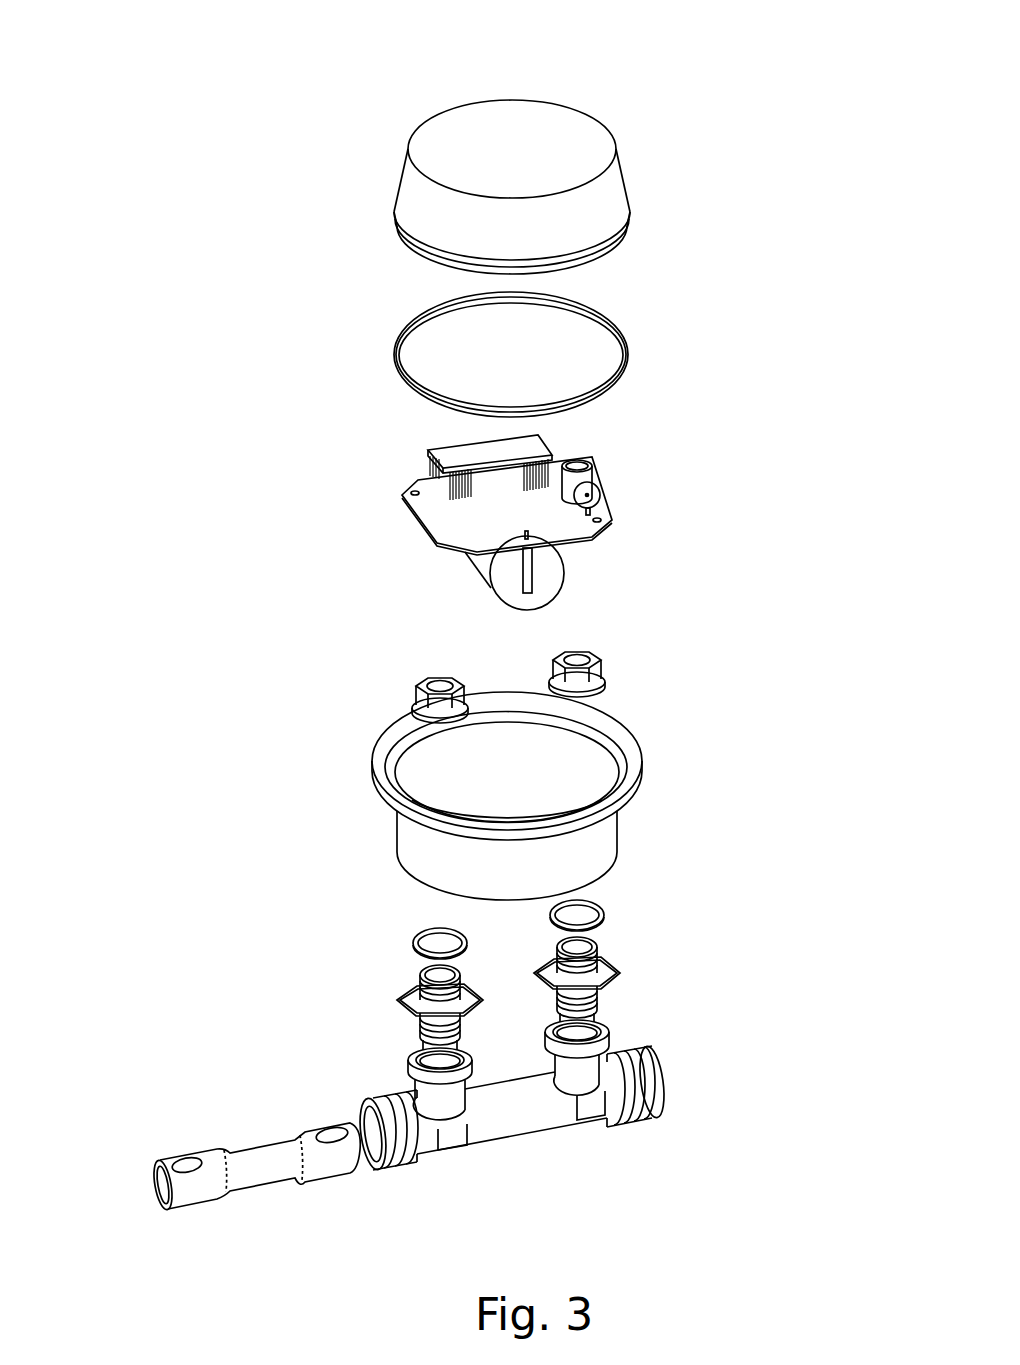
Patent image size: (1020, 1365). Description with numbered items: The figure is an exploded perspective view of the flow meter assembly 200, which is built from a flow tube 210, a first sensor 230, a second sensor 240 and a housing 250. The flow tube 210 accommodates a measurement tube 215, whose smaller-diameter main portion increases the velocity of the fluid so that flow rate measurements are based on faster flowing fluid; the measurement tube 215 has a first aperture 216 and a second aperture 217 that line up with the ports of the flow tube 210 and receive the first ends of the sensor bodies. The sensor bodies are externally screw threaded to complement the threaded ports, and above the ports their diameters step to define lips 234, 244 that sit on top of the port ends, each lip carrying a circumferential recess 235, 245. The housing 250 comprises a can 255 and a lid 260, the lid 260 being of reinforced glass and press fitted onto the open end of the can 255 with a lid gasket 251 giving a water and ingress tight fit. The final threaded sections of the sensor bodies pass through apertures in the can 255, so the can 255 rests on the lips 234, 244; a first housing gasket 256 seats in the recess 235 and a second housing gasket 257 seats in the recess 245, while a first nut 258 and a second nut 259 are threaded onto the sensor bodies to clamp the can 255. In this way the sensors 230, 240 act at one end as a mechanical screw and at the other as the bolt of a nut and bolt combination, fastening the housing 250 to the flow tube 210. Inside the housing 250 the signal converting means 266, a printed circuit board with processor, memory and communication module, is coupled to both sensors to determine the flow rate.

The flow meter assembly 200 is at (668, 59).
The flow tube 210 is at (695, 1022).
The measurement tube 215 is at (137, 1145).
The first aperture 216 is at (188, 1163).
The second aperture 217 is at (332, 1132).
The first sensor 230 is at (410, 992).
The lip 234 is at (468, 1035).
The recess 235 is at (398, 1012).
The second sensor 240 is at (603, 962).
The lip 244 is at (540, 990).
The recess 245 is at (605, 968).
The housing 250 is at (776, 137).
The lid gasket 251 is at (396, 356).
The can 255 is at (395, 838).
The first housing gasket 256 is at (410, 944).
The second housing gasket 257 is at (603, 918).
The first nut 258 is at (418, 696).
The second nut 259 is at (605, 676).
The lid 260 is at (400, 186).
The signal converting means 266 is at (410, 494).